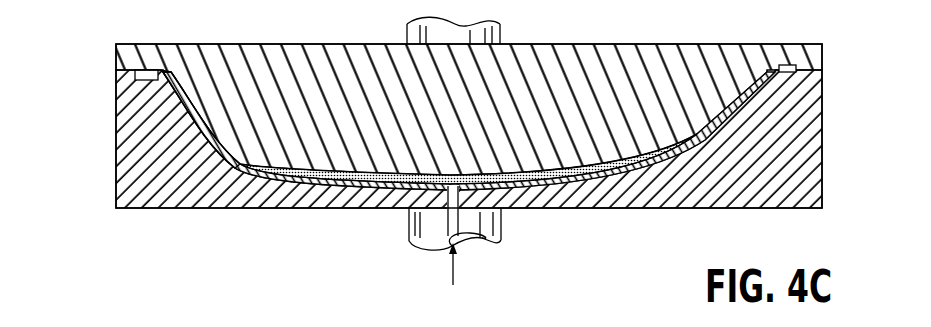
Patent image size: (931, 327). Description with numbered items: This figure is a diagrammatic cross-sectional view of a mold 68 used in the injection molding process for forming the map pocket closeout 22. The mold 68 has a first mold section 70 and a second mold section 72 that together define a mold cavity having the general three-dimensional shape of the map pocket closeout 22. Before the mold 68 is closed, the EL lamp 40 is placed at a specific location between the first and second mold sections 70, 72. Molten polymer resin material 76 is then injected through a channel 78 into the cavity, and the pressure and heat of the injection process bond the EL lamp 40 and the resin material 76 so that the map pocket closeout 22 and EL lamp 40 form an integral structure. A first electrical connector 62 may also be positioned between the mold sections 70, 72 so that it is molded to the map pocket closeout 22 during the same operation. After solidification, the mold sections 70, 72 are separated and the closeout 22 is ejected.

The mold 68 is at (67, 55).
The first mold section 70 is at (176, 44).
The second mold section 72 is at (153, 209).
The molten polymer resin material 76 is at (233, 166).
The EL lamp 40 is at (309, 174).
The channel 78 is at (450, 219).
The map pocket closeout 22 is at (736, 150).
The first electrical connector 62 is at (797, 69).